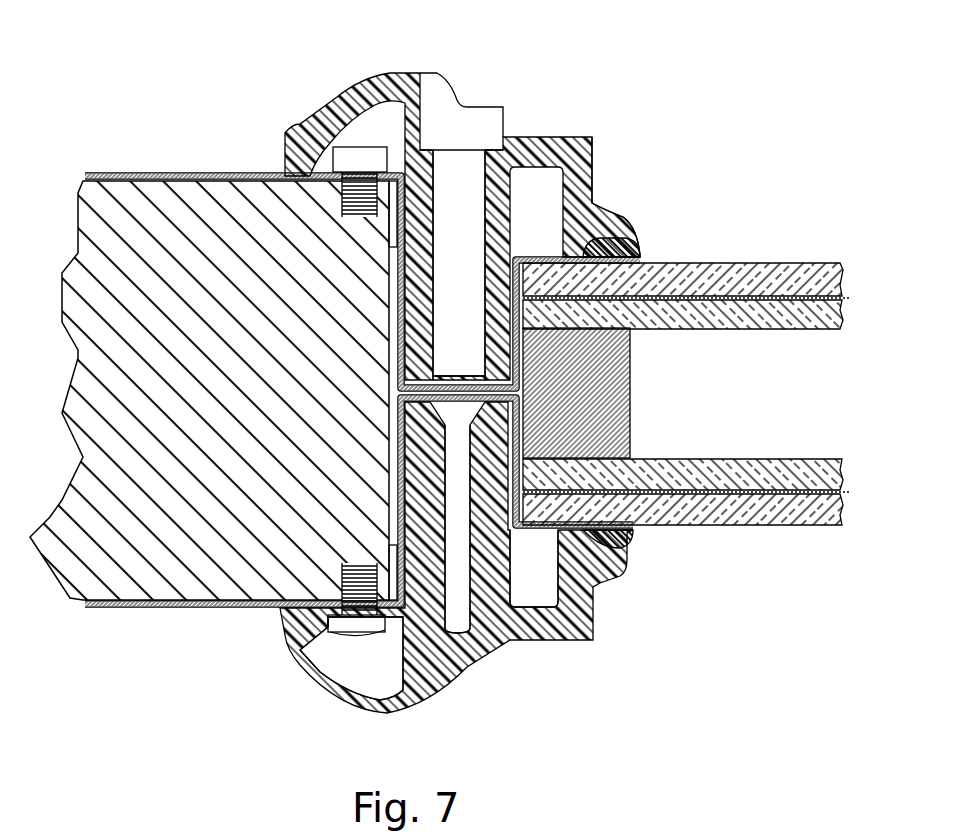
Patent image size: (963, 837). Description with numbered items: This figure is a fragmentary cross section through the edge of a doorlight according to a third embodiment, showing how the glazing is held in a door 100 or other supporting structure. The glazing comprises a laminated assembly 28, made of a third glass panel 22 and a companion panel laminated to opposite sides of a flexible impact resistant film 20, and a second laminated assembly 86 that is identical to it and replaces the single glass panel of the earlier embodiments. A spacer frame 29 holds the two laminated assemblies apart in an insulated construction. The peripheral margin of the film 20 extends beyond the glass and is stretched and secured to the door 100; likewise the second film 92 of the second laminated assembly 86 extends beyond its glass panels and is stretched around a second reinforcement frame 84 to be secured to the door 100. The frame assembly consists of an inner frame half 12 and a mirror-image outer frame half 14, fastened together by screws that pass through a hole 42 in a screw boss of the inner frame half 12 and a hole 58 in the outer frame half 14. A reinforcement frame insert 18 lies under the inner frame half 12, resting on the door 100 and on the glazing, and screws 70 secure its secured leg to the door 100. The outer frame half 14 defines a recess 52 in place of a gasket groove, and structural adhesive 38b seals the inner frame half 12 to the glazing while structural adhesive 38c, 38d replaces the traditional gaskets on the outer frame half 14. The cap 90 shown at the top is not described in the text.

The inner frame half 12 is at (548, 136).
The outer frame half 14 is at (477, 663).
The reinforcement frame insert 18 is at (537, 258).
The flexible impact resistant film 20 is at (853, 300).
The third glass panel 22 is at (778, 262).
The laminated assembly 28 is at (702, 241).
The spacer frame 29 is at (630, 427).
The structural adhesive 38b is at (277, 172).
The structural adhesive 38c is at (270, 612).
The structural adhesive 38d is at (637, 524).
The hole 42 is at (460, 183).
The recess 52 is at (380, 663).
The hole 58 is at (455, 627).
The screw 70 is at (343, 105).
The second reinforcement frame 84 is at (530, 531).
The second laminated assembly 86 is at (697, 520).
The cap 90 is at (440, 113).
The second film 92 is at (851, 488).
The door 100 is at (167, 173).